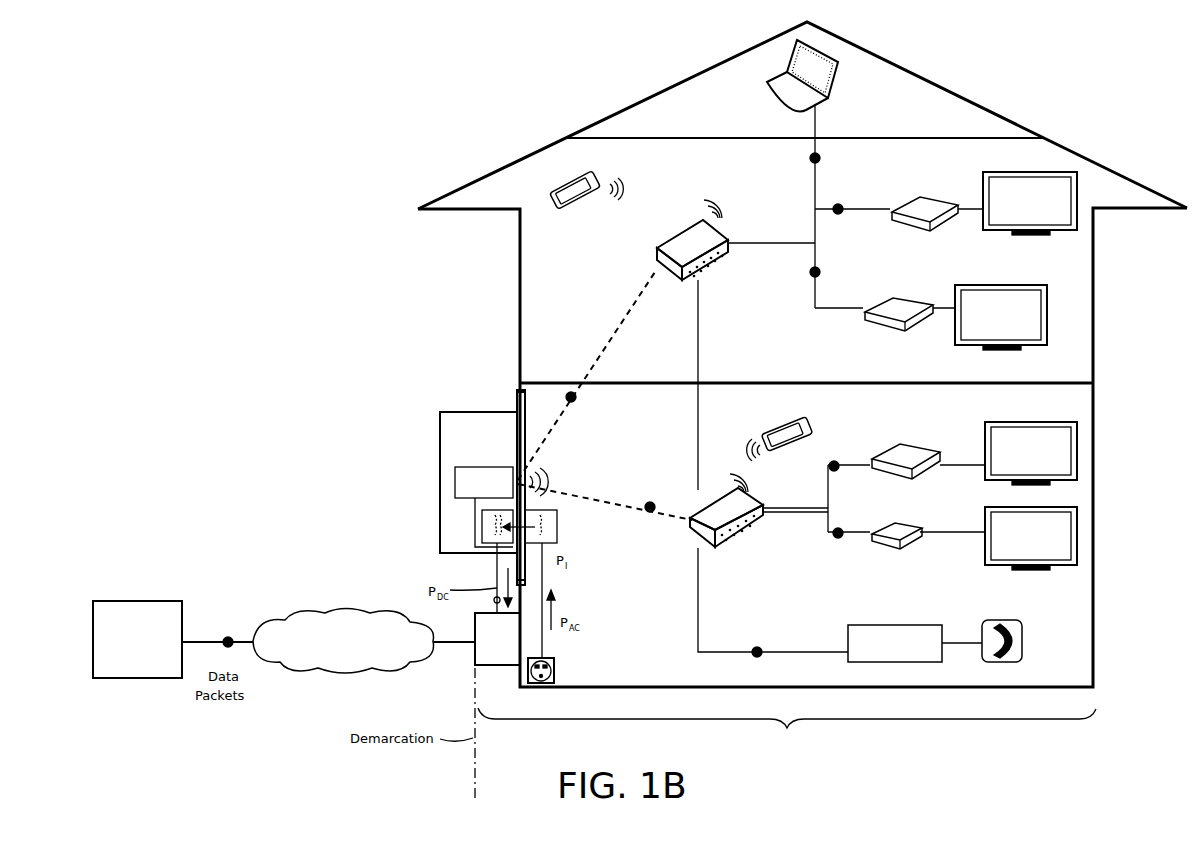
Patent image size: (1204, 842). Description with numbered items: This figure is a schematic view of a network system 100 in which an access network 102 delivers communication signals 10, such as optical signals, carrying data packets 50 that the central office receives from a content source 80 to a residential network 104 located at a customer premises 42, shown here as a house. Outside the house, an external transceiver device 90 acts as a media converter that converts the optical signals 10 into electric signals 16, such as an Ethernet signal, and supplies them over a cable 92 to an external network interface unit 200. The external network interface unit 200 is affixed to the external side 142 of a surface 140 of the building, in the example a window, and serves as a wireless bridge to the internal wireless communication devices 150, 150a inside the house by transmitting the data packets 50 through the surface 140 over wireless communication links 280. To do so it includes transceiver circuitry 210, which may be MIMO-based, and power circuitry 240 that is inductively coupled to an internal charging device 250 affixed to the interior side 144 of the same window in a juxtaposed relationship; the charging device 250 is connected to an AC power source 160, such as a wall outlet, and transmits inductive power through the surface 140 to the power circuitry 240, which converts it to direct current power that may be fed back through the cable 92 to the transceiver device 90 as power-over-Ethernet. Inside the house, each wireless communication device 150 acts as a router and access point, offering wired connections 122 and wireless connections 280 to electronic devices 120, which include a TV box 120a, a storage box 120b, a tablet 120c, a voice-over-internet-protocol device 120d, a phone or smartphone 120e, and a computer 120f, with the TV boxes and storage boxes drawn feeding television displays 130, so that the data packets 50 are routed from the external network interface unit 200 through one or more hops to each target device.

The network system 100 is at (247, 76).
The customer premises 42 is at (1031, 134).
The surface 140 is at (519, 390).
The external side 142 is at (517, 397).
The interior side 144 is at (525, 578).
The external network interface unit 200 is at (451, 465).
The transceiver circuitry 210 is at (455, 485).
The power circuitry 240 is at (482, 530).
The internal charging device 250 is at (557, 527).
The cable 92 is at (497, 568).
The electric signal 16 is at (494, 600).
The external transceiver device 90 is at (475, 632).
The AC power source 160 is at (554, 670).
The content source 80 is at (140, 678).
The access network 102 is at (348, 612).
The communication signal 10 is at (443, 643).
The residential network 104 is at (787, 732).
The wired connection 122 is at (770, 242).
The data packets 50 is at (811, 158).
The wireless communication link 280 is at (640, 333).
The wireless communication device 150 is at (707, 382).
The internal wireless communication device 150a is at (735, 548).
The electronic device 120 is at (818, 351).
The TV box 120a is at (878, 533).
The storage box 120b is at (894, 450).
The tablet 120c is at (784, 424).
The voice-over-internet protocol device 120d is at (848, 627).
The phone or smartphone 120e is at (586, 204).
The computer 120f is at (836, 70).
The television / display 130 is at (1058, 237).